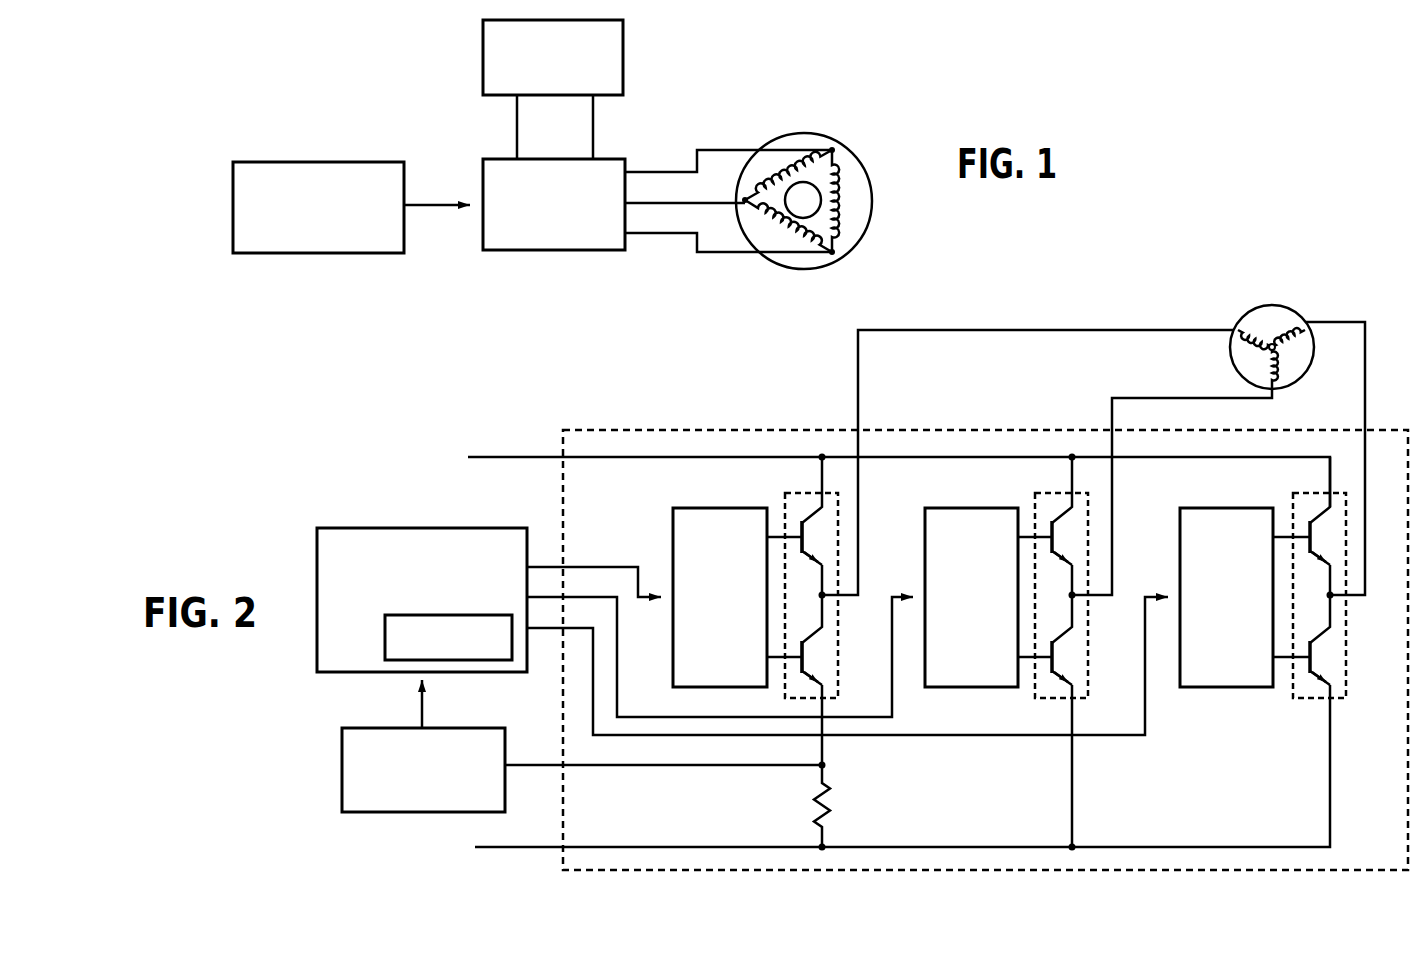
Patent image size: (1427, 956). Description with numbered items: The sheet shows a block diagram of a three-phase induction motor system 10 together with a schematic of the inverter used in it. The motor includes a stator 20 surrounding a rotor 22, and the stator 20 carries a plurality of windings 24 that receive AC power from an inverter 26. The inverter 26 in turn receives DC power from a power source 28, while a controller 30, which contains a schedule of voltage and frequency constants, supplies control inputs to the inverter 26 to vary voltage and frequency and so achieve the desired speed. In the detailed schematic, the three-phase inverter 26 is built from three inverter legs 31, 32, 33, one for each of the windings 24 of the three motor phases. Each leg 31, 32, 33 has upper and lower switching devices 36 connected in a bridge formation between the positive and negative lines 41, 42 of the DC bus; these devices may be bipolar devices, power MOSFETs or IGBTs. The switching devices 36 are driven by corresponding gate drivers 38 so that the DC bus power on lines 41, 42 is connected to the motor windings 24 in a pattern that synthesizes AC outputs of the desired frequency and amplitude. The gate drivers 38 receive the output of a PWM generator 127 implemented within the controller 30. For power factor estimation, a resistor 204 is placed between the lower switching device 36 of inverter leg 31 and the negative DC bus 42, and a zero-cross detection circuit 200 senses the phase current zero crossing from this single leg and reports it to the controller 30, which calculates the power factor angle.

In FIG. 1, the three-phase induction motor system 10 is at (368, 102).
In FIG. 1, the stator 20 is at (812, 132).
In FIG. 1, the rotor 22 is at (812, 182).
In FIG. 1, the windings 24 is at (783, 170).
In FIG. 2, the windings 24 is at (1290, 318).
In FIG. 1, the inverter 26 is at (516, 250).
In FIG. 2, the inverter 26 is at (716, 426).
In FIG. 1, the power source 28 is at (483, 58).
In FIG. 1, the controller 30 is at (258, 162).
In FIG. 2, the controller 30 is at (352, 528).
In FIG. 2, the inverter leg 31 is at (781, 695).
In FIG. 2, the inverter leg 32 is at (1031, 695).
In FIG. 2, the inverter leg 33 is at (1289, 695).
In FIG. 2, the switching devices 36 is at (813, 525).
In FIG. 2, the gate drivers 38 is at (673, 535).
In FIG. 2, the positive line of the DC bus 41 is at (500, 457).
In FIG. 2, the negative line of the DC bus 42 is at (600, 847).
In FIG. 2, the PWM generator 127 is at (385, 640).
In FIG. 2, the zero-cross detection circuit 200 is at (365, 815).
In FIG. 2, the resistor 204 is at (832, 808).